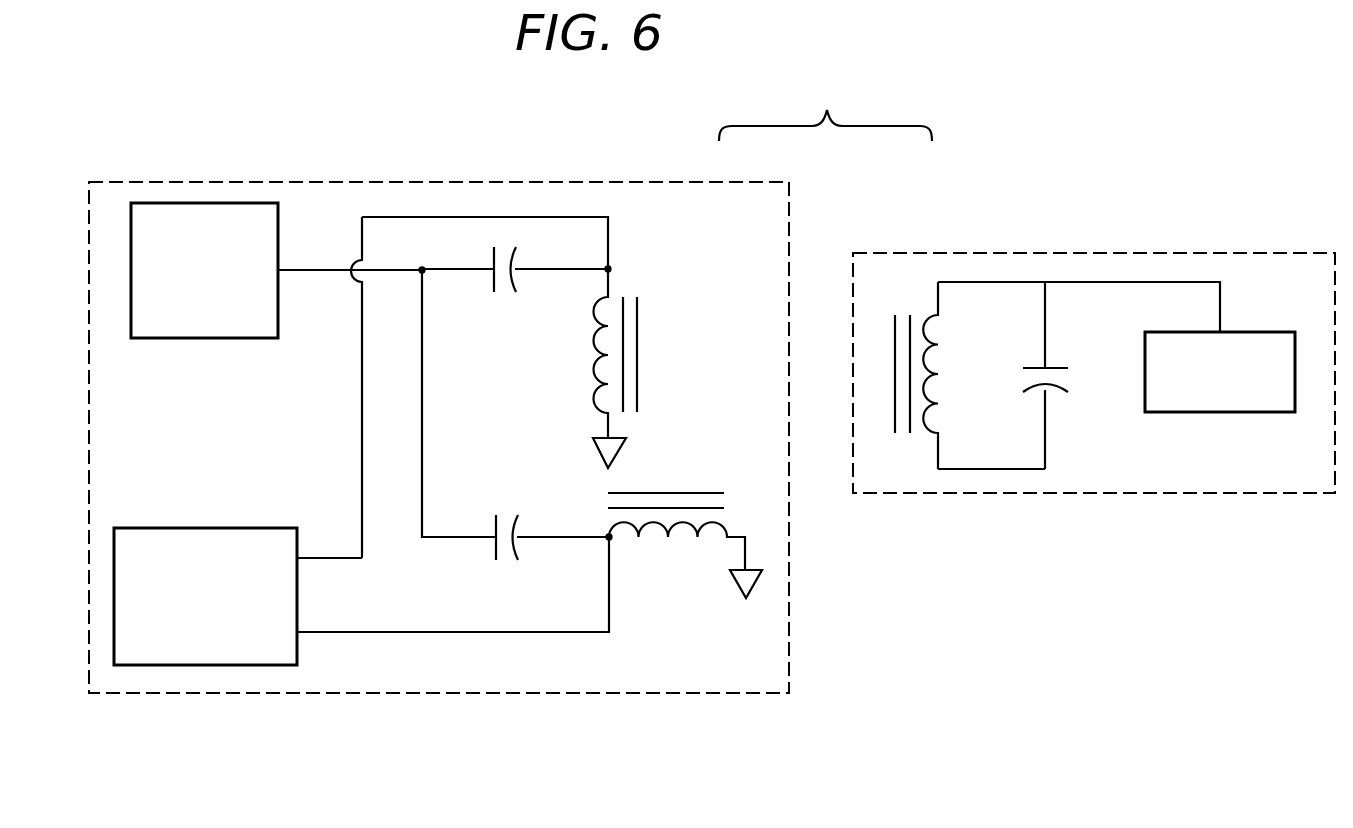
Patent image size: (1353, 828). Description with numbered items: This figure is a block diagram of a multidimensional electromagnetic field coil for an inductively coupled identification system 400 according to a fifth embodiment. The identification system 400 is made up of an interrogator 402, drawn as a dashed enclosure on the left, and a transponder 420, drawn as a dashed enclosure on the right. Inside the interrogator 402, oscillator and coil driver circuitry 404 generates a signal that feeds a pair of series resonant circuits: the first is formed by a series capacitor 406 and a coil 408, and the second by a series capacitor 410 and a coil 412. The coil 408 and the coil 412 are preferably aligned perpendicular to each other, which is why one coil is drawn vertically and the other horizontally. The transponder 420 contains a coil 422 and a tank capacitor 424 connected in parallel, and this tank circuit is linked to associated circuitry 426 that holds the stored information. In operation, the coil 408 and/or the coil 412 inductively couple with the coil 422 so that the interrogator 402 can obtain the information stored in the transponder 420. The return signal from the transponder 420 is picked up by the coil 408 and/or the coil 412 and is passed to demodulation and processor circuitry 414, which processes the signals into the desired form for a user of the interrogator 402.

The inductively coupled identification system 400 is at (1027, 218).
The interrogator 402 is at (312, 182).
The oscillator and coil driver circuitry 404 is at (178, 339).
The series capacitor 406 is at (493, 259).
The coil 408 is at (594, 372).
The series capacitor 410 is at (494, 549).
The coil 412 is at (665, 528).
The demodulation and processor circuitry 414 is at (205, 528).
The transponder 420 is at (1168, 253).
The coil 422 is at (928, 340).
The tank capacitor 424 is at (1050, 382).
The associated circuitry 426 is at (1255, 332).